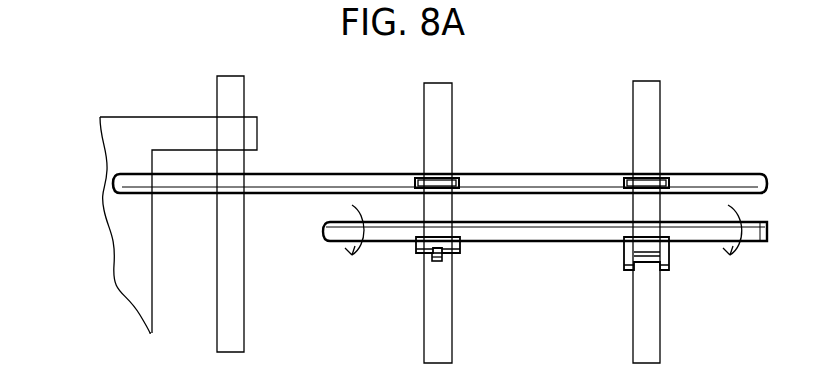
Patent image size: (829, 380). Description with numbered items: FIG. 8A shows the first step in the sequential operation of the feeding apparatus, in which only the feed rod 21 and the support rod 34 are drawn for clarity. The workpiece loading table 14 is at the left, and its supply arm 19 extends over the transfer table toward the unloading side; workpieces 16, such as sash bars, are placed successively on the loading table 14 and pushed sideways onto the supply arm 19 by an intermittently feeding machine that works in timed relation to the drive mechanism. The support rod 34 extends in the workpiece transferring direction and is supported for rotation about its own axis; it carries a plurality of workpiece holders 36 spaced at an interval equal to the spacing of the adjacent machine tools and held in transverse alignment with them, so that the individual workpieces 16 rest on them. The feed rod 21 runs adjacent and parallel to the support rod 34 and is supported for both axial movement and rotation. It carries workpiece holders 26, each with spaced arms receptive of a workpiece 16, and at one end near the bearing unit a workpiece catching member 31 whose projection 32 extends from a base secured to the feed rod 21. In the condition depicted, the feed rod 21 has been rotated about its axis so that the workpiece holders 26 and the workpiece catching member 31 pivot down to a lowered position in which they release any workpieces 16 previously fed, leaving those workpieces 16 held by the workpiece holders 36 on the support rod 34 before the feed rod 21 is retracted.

The workpiece loading table 14 is at (120, 135).
The supply arm 19 is at (181, 117).
The workpiece 16 is at (242, 93).
The support rod 34 is at (577, 175).
The workpiece holder 36 is at (433, 180).
The feed rod 21 is at (542, 238).
The workpiece catching member 31 is at (417, 256).
The projection 32 is at (433, 262).
The workpiece holder 26 is at (665, 258).